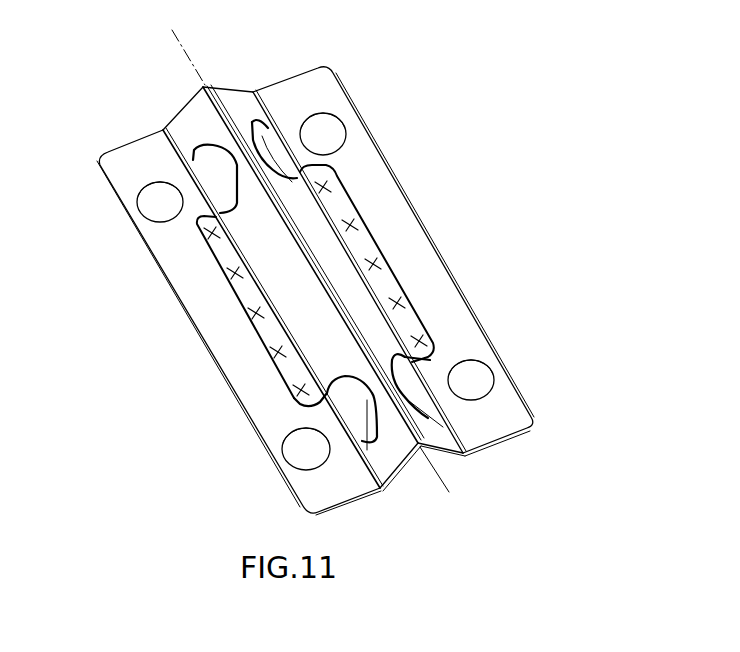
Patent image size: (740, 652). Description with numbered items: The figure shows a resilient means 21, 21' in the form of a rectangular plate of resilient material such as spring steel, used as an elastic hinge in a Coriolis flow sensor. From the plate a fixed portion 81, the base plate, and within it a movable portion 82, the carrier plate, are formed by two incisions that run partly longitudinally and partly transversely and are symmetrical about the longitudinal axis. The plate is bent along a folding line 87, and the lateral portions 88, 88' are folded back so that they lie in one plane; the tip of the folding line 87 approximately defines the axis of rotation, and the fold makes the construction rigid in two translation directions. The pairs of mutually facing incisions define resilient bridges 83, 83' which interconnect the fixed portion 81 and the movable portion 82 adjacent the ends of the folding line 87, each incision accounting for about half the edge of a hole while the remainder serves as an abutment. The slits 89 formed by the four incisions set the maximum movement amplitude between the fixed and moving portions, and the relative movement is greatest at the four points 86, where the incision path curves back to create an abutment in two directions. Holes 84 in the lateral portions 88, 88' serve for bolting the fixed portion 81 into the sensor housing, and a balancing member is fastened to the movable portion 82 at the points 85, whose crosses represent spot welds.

The resilient means 21 is at (310, 284).
The resilient means 21' is at (449, 88).
The fixed portion 81 is at (403, 237).
The movable portion 82 is at (346, 283).
The resilient bridge 83 is at (397, 280).
The resilient bridge 83' is at (313, 242).
The hole 84 is at (151, 200).
The point 85 is at (228, 272).
The point 86 is at (226, 208).
The folding line 87 is at (436, 467).
The lateral portion 88 is at (239, 322).
The lateral portion 88' is at (393, 261).
The slit 89 is at (367, 450).